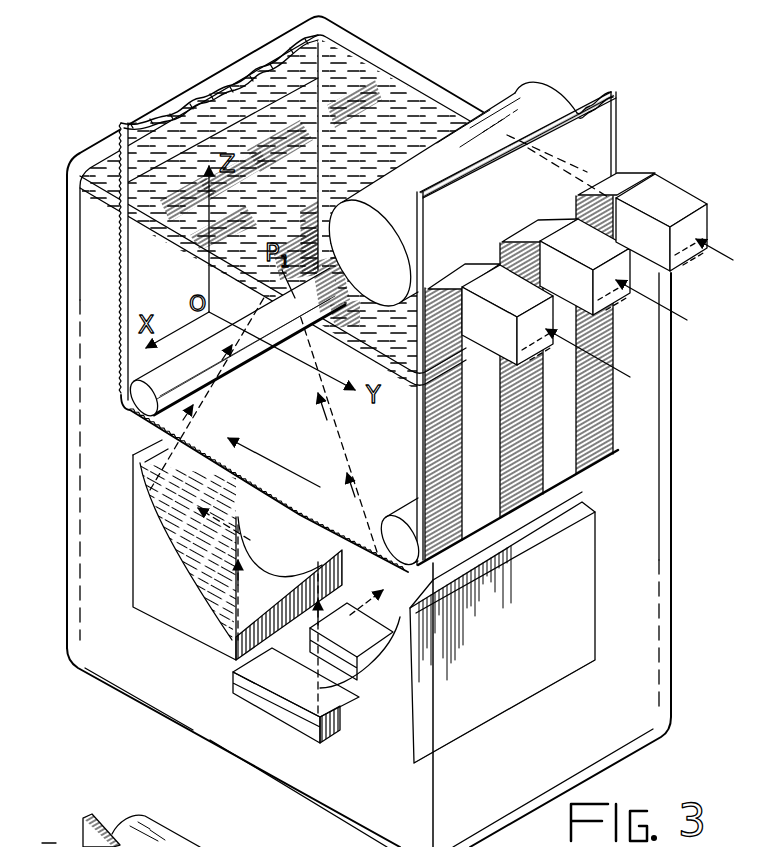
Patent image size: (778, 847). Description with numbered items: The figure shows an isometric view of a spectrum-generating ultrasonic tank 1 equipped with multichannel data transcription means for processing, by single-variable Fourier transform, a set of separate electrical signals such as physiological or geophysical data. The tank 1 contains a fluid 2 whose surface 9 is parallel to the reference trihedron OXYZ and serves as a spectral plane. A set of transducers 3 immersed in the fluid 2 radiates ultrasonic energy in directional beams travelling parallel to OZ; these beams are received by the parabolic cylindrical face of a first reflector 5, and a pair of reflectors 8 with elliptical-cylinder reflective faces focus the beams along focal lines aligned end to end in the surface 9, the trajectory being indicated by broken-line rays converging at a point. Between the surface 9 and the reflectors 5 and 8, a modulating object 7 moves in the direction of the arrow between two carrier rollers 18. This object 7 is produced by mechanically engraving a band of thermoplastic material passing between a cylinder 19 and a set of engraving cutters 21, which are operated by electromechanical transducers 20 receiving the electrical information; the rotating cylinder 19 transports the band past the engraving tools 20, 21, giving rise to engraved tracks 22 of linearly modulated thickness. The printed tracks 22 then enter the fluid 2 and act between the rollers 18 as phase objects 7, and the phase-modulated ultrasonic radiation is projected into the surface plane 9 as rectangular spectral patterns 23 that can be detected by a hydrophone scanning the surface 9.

The ultrasonic tank 1 is at (673, 553).
The fluid 2 is at (552, 697).
The set of transducers 3 is at (233, 690).
The first reflector 5 is at (287, 565).
The modulating object 7 is at (140, 133).
The pair of reflectors 8 is at (177, 527).
The surface of the fluid 9 is at (340, 75).
The carrier rollers 18 is at (242, 370).
The cylinder 19 is at (508, 113).
The electromechanical transducers 20 is at (500, 318).
The engraving cutters 21 is at (453, 277).
The engraved tracks 22 is at (463, 520).
The spectral patterns 23 is at (240, 213).